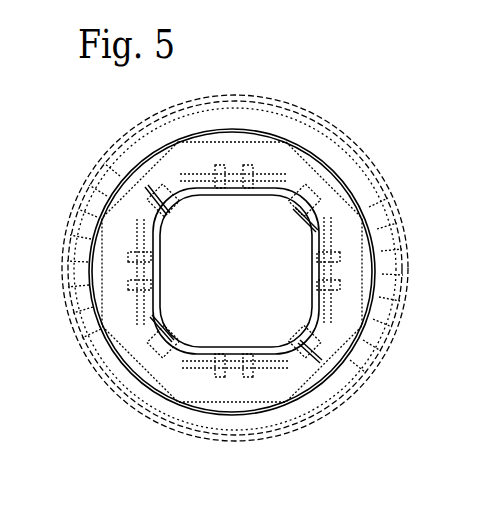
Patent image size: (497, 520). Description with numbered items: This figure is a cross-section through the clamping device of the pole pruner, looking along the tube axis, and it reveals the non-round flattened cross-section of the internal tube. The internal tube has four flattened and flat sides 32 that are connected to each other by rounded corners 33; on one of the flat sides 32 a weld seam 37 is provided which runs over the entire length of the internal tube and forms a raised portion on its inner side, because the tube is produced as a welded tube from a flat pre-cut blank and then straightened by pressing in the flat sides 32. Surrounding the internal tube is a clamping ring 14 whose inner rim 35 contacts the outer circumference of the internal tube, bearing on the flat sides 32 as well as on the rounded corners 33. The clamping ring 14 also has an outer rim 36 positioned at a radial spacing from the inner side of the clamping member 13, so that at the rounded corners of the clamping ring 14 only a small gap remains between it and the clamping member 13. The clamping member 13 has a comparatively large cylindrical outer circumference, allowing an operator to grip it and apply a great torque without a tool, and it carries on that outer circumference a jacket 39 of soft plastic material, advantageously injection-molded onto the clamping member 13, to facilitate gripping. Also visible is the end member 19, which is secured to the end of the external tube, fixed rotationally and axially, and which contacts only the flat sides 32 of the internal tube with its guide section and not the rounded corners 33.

The clamping member 13 is at (258, 415).
The clamping ring 14 is at (130, 343).
The end member 19 is at (250, 133).
The flat side 32 is at (222, 352).
The rounded corner 33 is at (297, 208).
The inner rim 35 is at (176, 346).
The outer rim 36 is at (103, 285).
The weld seam 37 is at (162, 273).
The jacket 39 is at (312, 420).